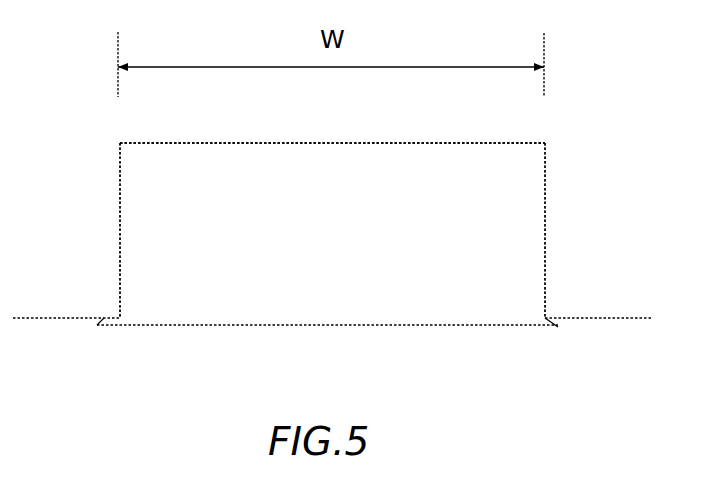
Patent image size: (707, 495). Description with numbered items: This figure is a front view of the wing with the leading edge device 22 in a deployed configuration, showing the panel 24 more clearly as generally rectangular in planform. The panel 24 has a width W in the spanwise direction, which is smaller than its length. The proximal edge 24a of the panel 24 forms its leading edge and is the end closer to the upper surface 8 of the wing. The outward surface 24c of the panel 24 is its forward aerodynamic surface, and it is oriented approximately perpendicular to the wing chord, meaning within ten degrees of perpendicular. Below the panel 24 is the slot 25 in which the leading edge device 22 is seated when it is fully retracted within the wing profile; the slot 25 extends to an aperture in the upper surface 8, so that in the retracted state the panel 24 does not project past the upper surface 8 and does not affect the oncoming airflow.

The upper surface 8 is at (599, 337).
The leading edge device 22 is at (556, 131).
The panel 24 is at (143, 211).
The proximal edge 24a is at (127, 142).
The outward surface 24c is at (512, 218).
The slot 25 is at (127, 323).